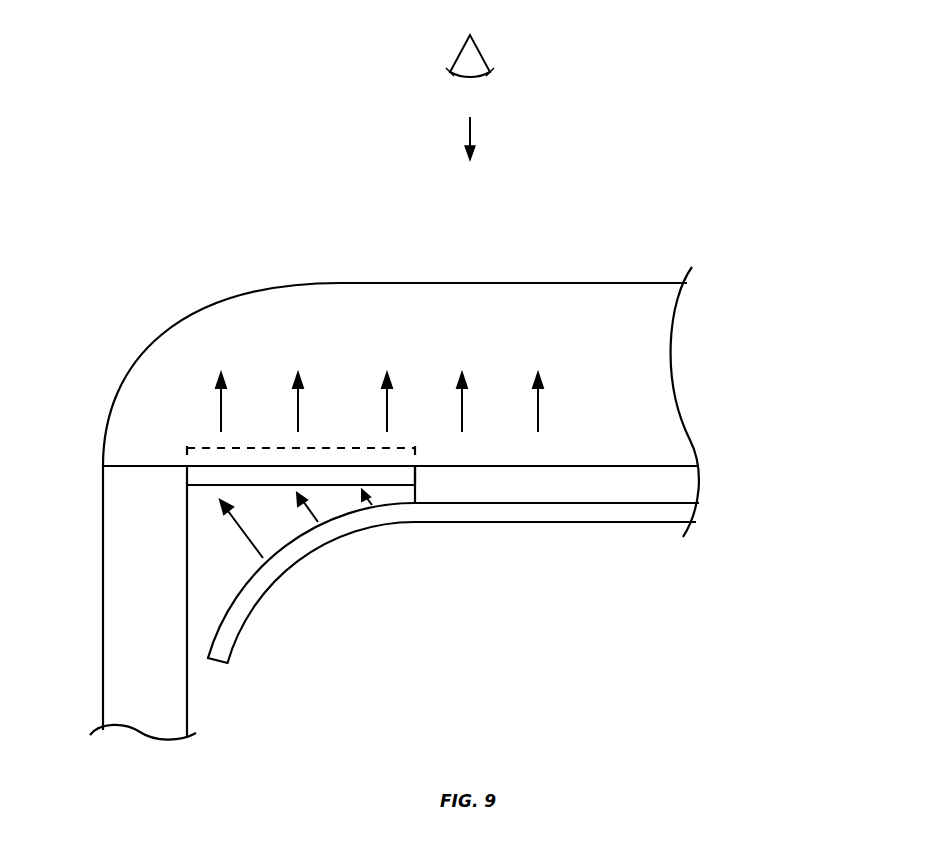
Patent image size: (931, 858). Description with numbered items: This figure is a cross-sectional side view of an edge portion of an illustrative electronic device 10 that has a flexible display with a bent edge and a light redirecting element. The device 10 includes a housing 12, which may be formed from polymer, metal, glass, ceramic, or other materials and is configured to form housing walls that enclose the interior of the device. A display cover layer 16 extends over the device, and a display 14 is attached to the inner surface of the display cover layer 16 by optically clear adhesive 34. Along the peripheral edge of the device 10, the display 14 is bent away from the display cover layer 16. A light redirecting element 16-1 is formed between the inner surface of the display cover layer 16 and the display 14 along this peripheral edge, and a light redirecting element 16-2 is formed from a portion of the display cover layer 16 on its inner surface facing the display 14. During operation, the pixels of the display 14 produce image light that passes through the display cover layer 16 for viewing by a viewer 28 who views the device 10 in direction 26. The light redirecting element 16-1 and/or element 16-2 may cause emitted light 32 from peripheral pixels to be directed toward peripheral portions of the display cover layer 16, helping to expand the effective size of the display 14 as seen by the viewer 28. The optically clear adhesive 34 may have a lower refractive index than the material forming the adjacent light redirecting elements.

The device 10 is at (783, 265).
The housing 12 is at (118, 662).
The display 14 is at (495, 522).
The display cover layer 16 is at (660, 370).
The light redirecting element 16-1 is at (208, 489).
The light redirecting element 16-2 is at (206, 448).
The direction 26 is at (471, 130).
The viewer 28 is at (481, 54).
The emitted light 32 is at (387, 408).
The optically clear adhesive 34 is at (685, 487).